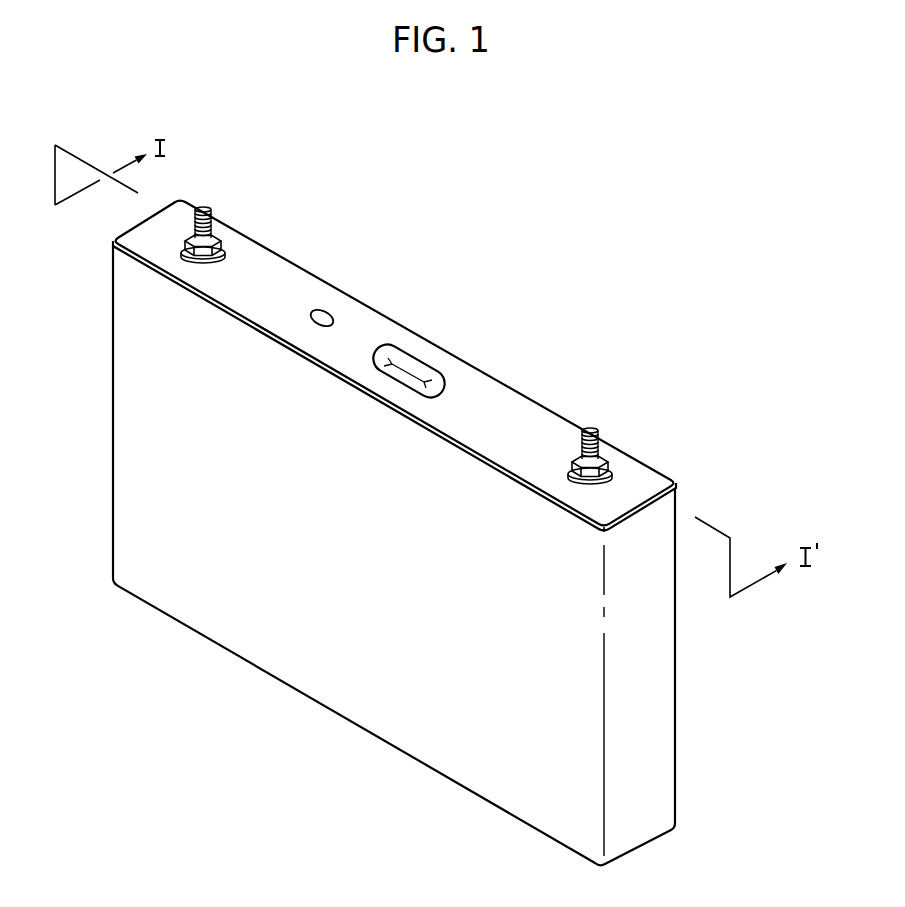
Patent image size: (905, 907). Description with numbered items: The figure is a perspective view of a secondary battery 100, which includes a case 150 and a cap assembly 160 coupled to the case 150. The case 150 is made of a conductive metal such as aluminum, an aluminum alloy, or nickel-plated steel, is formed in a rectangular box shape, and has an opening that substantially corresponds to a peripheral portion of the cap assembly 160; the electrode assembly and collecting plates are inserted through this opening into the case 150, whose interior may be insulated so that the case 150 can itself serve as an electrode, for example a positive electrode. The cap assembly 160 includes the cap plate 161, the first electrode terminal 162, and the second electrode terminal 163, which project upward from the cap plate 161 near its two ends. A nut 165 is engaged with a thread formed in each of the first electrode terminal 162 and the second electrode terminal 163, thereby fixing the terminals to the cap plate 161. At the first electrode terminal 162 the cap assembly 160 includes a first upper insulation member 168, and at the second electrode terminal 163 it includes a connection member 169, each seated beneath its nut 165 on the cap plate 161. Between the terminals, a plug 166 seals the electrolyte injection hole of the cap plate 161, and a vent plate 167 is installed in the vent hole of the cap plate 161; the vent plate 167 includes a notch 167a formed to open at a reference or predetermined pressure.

The secondary battery 100 is at (443, 182).
The case 150 is at (335, 697).
The cap assembly 160 is at (530, 392).
The cap plate 161 is at (373, 330).
The first electrode terminal 162 is at (593, 428).
The second electrode terminal 163 is at (205, 205).
The nut 165 is at (220, 243).
The plug 166 is at (326, 316).
The vent plate 167 is at (414, 353).
The notch 167a is at (424, 366).
The first upper insulation member 168 is at (614, 475).
The connection member 169 is at (226, 256).